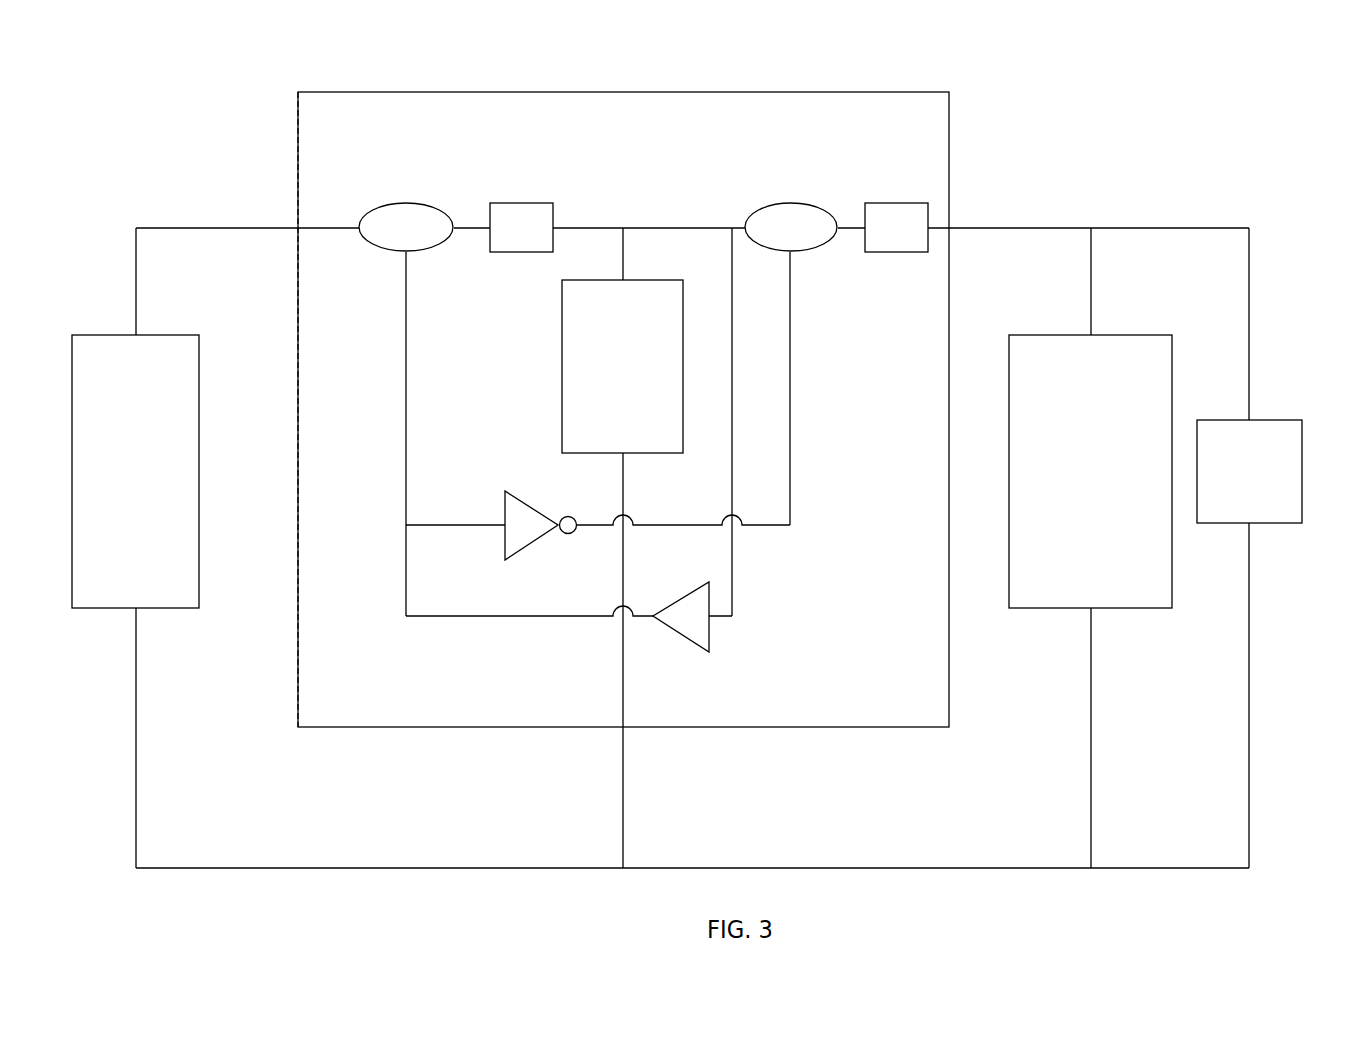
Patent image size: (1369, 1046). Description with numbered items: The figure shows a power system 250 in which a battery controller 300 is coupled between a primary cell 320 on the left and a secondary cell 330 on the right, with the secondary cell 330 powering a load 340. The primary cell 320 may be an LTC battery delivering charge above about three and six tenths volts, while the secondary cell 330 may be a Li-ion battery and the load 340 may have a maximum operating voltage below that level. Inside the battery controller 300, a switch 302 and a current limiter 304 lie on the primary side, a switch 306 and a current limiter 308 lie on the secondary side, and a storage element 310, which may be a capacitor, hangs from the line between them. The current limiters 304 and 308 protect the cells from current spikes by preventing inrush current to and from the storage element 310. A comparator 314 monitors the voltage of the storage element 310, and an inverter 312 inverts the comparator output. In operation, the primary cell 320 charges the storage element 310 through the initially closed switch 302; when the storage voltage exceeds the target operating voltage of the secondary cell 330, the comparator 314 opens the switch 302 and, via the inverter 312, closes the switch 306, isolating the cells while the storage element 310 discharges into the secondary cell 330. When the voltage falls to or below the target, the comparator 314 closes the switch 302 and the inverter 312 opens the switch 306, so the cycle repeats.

The power system 250 is at (1232, 99).
The battery controller 300 is at (937, 130).
The switch 302 is at (423, 242).
The current limiter 304 is at (538, 242).
The switch 306 is at (807, 242).
The current limiter 308 is at (912, 242).
The storage element 310 is at (608, 412).
The inverter 312 is at (542, 534).
The comparator 314 is at (705, 624).
The primary cell 320 is at (118, 512).
The secondary cell 330 is at (1108, 512).
The load 340 is at (1232, 500).